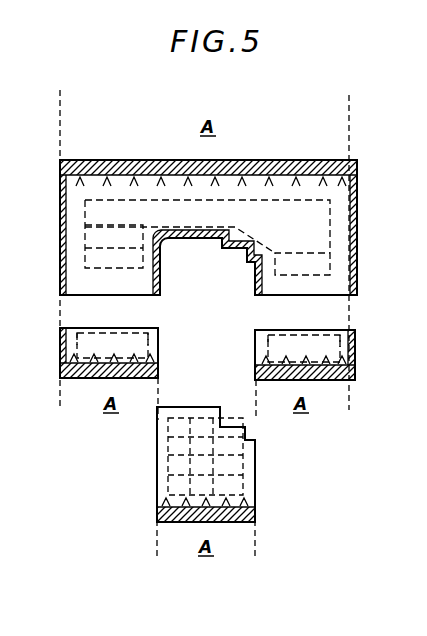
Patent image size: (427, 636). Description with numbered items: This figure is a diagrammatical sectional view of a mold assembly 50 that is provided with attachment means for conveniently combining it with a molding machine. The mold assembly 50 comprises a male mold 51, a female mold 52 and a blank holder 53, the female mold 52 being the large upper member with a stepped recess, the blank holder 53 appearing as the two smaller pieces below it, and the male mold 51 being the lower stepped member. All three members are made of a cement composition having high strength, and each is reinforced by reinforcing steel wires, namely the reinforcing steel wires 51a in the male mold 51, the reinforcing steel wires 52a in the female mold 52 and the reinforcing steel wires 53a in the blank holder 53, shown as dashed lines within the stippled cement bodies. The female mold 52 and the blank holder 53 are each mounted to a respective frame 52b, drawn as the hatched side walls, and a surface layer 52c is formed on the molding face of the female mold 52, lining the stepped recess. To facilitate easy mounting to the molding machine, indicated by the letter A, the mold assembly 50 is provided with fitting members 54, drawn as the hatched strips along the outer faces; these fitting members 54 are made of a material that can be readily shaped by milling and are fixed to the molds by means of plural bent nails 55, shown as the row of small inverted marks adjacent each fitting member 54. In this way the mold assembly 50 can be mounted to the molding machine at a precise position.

The mold assembly 50 is at (352, 87).
The male mold 51 is at (162, 466).
The reinforcing steel wires 51a is at (232, 440).
The female mold 52 is at (173, 215).
The reinforcing steel wires 52a is at (330, 253).
The frame 52b is at (357, 181).
The surface layer 52c is at (230, 255).
The blank holder 53 is at (125, 345).
The reinforcing steel wires 53a is at (78, 333).
The fitting members 54 is at (328, 177).
The bent nails 55 is at (78, 180).